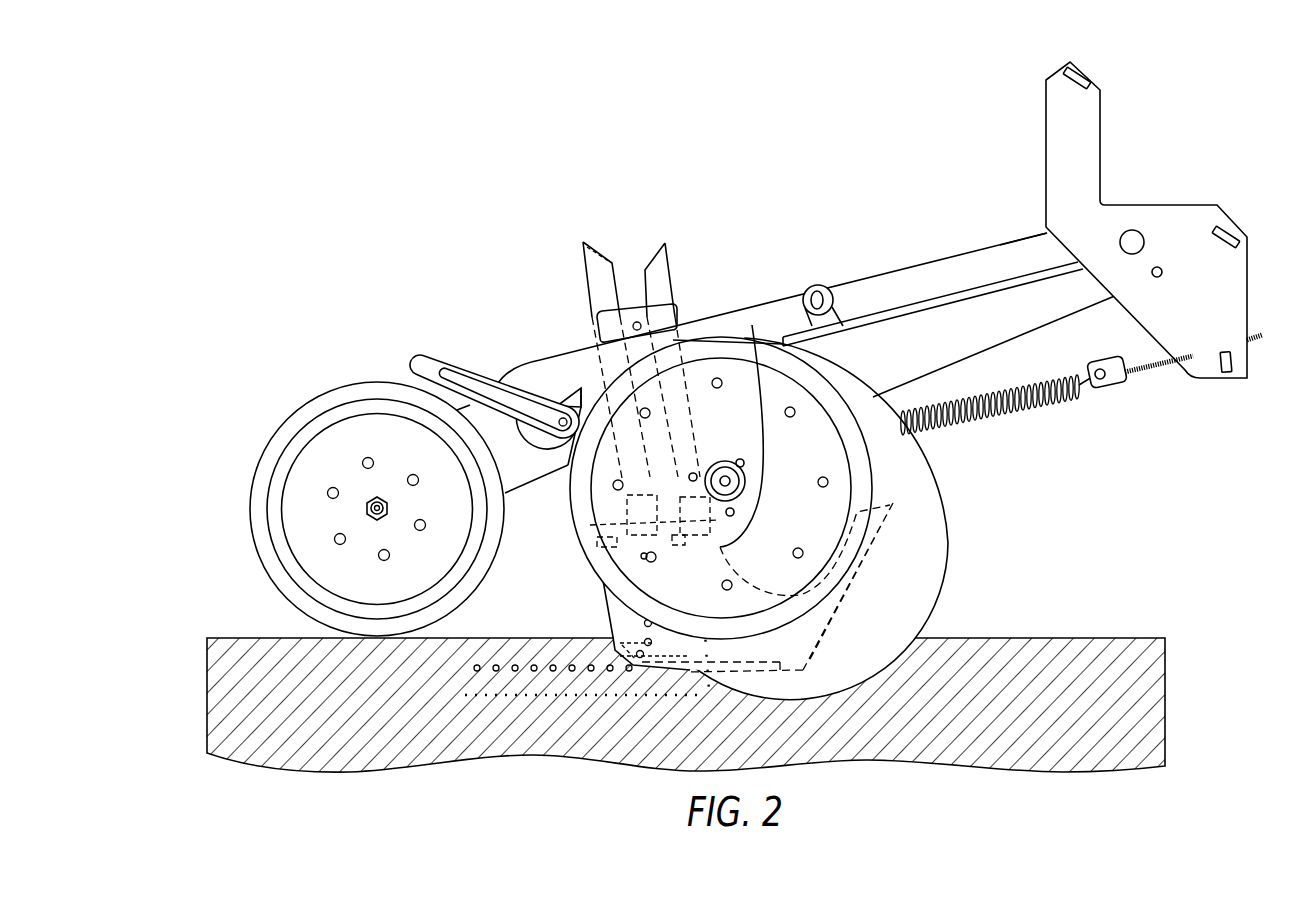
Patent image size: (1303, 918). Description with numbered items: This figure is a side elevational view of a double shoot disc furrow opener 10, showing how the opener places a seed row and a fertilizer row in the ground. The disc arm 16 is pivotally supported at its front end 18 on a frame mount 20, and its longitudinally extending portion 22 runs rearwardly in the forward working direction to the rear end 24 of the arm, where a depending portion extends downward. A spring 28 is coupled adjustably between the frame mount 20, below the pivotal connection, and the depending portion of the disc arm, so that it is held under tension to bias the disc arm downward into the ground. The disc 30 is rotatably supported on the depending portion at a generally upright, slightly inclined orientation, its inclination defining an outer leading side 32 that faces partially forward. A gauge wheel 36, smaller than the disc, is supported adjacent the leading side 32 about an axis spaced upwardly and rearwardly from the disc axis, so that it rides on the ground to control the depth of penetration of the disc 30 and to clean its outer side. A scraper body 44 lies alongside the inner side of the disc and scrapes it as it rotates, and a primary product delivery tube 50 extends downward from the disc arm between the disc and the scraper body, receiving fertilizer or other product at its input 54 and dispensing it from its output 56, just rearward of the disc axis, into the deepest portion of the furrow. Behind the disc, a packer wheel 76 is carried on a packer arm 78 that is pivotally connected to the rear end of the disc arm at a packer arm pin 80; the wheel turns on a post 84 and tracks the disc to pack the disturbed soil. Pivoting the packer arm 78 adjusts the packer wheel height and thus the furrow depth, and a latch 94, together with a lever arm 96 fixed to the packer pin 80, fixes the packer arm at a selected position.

The double shoot disc furrow opener 10 is at (412, 182).
The disc arm 16 is at (880, 297).
The front end 18 is at (1021, 257).
The frame mount 20 is at (1075, 122).
The longitudinally extending portion 22 is at (930, 276).
The rear end 24 is at (557, 366).
The spring 28 is at (1053, 400).
The disc 30 is at (935, 510).
The outer leading side 32 is at (918, 570).
The gauge wheel 36 is at (865, 470).
The scraper body 44 is at (618, 612).
The primary product delivery tube 50 is at (668, 277).
The input 54 is at (647, 258).
The output 56 is at (752, 325).
The packer wheel 76 is at (272, 497).
The packer arm 78 is at (455, 400).
The packer arm pin 80 is at (553, 400).
The post 84 is at (373, 505).
The latch 94 is at (574, 375).
The lever arm 96 is at (422, 365).